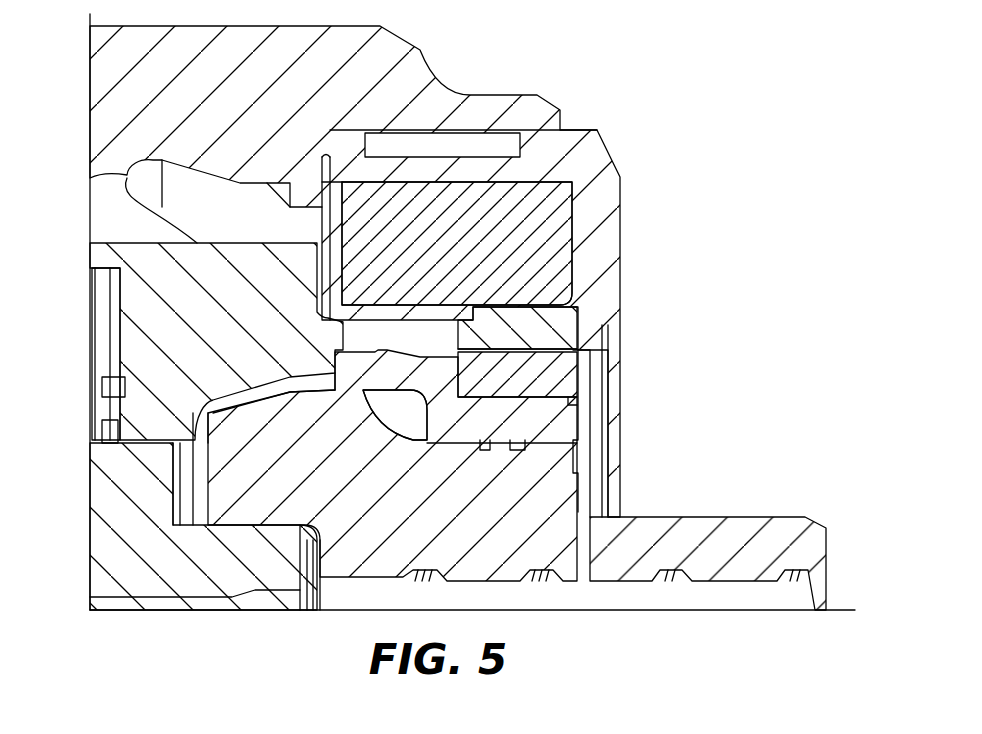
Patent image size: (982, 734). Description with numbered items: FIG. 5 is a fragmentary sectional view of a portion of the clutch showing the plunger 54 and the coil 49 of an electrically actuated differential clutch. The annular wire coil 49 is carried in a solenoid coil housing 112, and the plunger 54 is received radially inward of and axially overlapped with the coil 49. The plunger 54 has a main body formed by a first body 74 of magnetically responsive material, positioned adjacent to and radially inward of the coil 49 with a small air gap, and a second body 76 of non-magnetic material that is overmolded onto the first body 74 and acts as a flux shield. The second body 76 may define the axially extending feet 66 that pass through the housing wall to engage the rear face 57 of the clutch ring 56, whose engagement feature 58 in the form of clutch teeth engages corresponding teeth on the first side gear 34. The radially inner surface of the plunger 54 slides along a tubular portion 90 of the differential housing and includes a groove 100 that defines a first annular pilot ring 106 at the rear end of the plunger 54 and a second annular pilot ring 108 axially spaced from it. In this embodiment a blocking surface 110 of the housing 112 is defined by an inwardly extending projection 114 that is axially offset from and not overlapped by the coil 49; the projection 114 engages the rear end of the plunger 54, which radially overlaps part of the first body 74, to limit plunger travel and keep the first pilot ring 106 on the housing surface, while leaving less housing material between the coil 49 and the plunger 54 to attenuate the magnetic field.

The first side gear 34 is at (205, 580).
The annular wire coil 49 is at (557, 200).
The plunger 54 is at (598, 383).
The clutch ring 56 is at (163, 362).
The rear face 57 is at (330, 273).
The engagement feature 58 is at (104, 330).
The feet 66 is at (355, 372).
The first body 74 is at (544, 367).
The second body 76 is at (460, 422).
The tubular portion 90 is at (762, 517).
The groove 100 is at (517, 433).
The first annular pilot ring 106 is at (568, 445).
The second annular pilot ring 108 is at (484, 433).
The blocking surface 110 is at (574, 352).
The solenoid coil housing 112 is at (603, 216).
The inwardly extending projection 114 is at (599, 353).